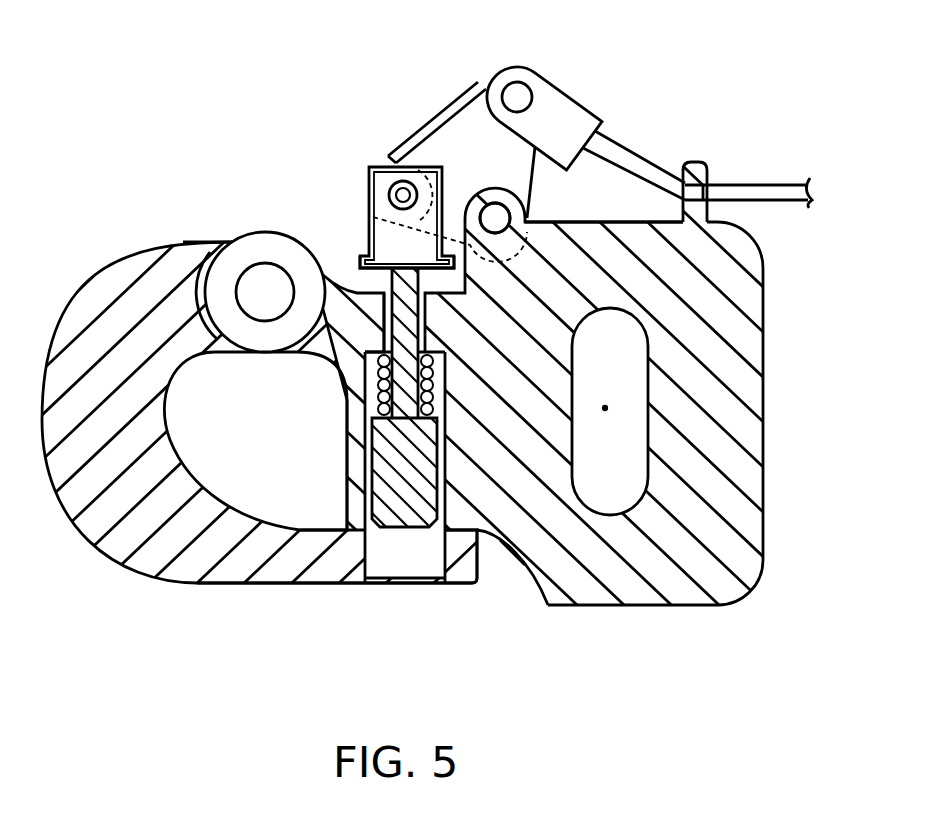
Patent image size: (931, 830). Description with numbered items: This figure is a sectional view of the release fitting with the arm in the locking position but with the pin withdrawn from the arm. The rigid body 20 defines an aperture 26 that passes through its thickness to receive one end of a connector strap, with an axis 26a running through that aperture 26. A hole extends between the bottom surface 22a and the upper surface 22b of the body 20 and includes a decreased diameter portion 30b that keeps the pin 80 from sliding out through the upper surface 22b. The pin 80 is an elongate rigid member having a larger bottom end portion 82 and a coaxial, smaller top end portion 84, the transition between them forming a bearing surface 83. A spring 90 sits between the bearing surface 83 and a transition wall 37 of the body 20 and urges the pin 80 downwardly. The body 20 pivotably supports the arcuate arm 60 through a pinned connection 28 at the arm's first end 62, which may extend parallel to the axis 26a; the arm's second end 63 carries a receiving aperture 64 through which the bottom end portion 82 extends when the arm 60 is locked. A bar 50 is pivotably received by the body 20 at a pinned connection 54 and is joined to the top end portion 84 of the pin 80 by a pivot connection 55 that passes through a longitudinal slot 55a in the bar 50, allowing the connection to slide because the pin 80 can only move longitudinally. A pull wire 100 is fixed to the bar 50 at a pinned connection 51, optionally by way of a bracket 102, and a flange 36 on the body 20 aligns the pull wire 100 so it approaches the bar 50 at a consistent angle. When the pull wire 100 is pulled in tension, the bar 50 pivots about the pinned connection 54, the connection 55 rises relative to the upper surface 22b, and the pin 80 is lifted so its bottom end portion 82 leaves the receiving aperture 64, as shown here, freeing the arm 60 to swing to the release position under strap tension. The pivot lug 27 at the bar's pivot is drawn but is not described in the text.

The body 20 is at (676, 585).
The bottom surface 22a is at (488, 540).
The upper surface 22b is at (550, 222).
The aperture 26 is at (600, 495).
The axis 26a is at (605, 408).
The pivot lug 27 is at (527, 200).
The pinned connection 28 is at (264, 285).
The decreased diameter portion 30b is at (387, 335).
The flange 36 is at (698, 163).
The transition wall 37 is at (633, 222).
The bar 50 is at (462, 112).
The pinned connection 51 is at (519, 94).
The pinned connection 54 is at (496, 204).
The pivot connection 55 is at (399, 195).
The longitudinal slot 55a is at (428, 194).
The arm 60 is at (162, 548).
The first end 62 is at (178, 252).
The second end 63 is at (350, 588).
The receiving aperture 64 is at (422, 567).
The pin 80 is at (515, 560).
The bottom end portion 82 is at (400, 520).
The bearing surface 83 is at (378, 409).
The top end portion 84 is at (400, 282).
The spring 90 is at (377, 362).
The pull wire 100 is at (744, 190).
The bracket 102 is at (573, 121).